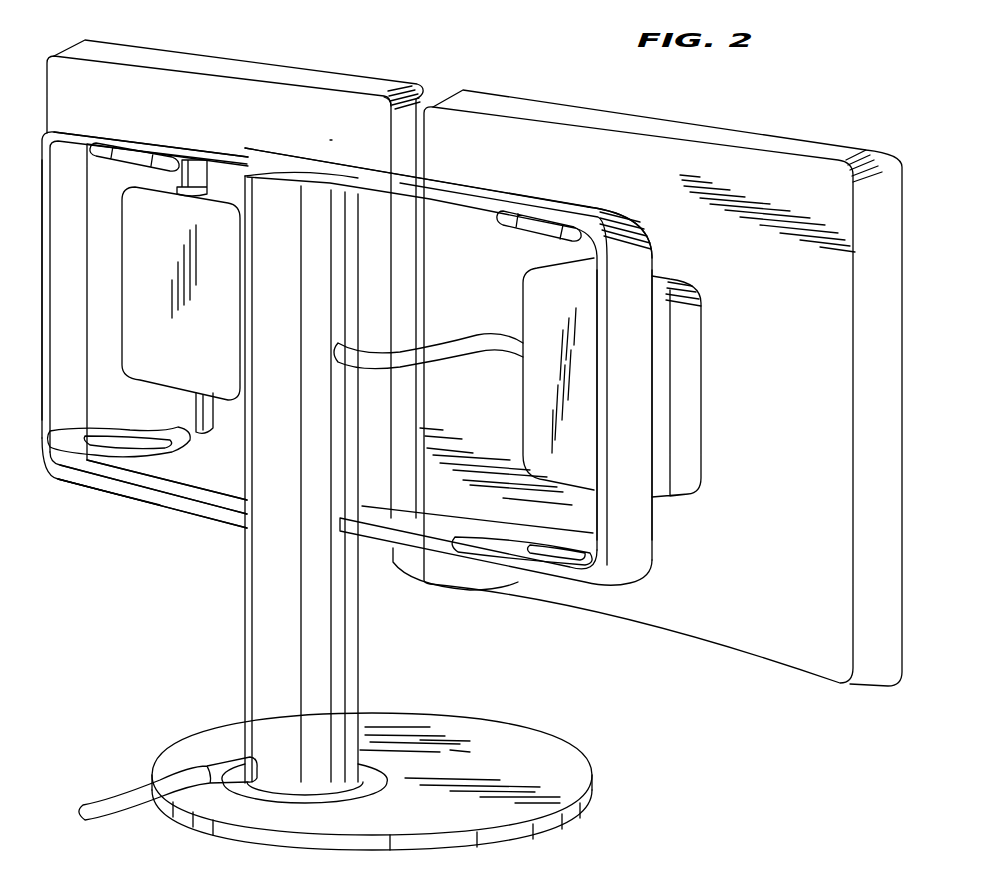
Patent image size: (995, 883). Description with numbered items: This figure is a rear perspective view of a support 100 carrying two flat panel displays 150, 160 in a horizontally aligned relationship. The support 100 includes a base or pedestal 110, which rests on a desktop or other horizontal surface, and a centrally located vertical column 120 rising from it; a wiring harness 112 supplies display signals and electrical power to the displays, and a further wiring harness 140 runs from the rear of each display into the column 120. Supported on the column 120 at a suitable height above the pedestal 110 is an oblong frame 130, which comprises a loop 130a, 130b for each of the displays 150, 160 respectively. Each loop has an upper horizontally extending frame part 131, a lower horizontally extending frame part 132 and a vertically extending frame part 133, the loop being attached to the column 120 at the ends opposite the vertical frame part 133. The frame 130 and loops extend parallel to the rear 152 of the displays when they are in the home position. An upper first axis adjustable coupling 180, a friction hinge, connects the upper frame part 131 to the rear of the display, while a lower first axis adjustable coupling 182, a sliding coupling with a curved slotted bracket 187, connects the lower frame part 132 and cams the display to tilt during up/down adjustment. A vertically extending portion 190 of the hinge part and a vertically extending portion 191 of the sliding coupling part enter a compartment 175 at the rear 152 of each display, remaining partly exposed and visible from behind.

The support 100 is at (153, 573).
The base or pedestal 110 is at (518, 728).
The wiring harness 112 is at (125, 797).
The vertical column 120 is at (362, 678).
The frame 130 is at (509, 183).
The loop 130a is at (661, 577).
The loop 130b is at (43, 413).
The upper horizontally extending frame part 131 is at (176, 146).
The lower horizontally extending frame part 132 is at (197, 475).
The vertically extending frame part 133 is at (639, 305).
The wiring harness 140 is at (447, 345).
The flat panel display 150 is at (680, 116).
The rear of the flat panel display 152 is at (363, 136).
The flat panel display 160 is at (291, 66).
The compartment 175 is at (140, 372).
The upper first axis adjustable coupling 180 is at (113, 176).
The lower first axis adjustable coupling 182 is at (168, 475).
The slotted bracket 187 is at (72, 447).
The vertically extending portion 190 is at (198, 178).
The vertically extending portion 191 is at (220, 425).